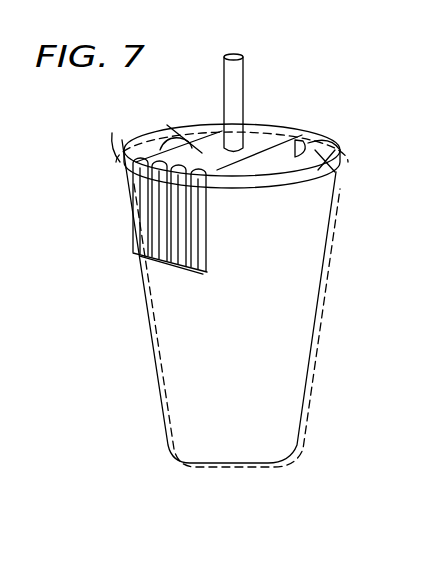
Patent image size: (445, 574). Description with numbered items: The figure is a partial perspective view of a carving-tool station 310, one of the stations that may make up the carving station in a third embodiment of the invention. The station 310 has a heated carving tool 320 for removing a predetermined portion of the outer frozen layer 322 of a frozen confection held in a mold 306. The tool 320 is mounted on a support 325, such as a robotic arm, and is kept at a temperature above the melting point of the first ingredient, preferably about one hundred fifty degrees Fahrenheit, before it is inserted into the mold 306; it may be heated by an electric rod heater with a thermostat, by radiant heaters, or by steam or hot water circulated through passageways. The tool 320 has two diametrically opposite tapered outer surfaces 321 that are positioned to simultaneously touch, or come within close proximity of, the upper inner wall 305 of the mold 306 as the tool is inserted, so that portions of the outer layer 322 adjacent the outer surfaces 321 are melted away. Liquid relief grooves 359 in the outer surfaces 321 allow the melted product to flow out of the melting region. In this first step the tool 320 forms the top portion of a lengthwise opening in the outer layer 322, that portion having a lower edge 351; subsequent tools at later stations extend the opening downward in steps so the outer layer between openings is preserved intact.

The inner wall of the mold 305 is at (333, 157).
The mold 306 is at (177, 392).
The carving-tool station 310 is at (209, 358).
The heated carving tool 320 is at (167, 125).
The outer surfaces of the tool 321 is at (170, 220).
The outer frozen layer 322 is at (117, 158).
The support 325 is at (238, 98).
The lower edge 351 is at (177, 265).
The liquid relief grooves 359 is at (170, 243).